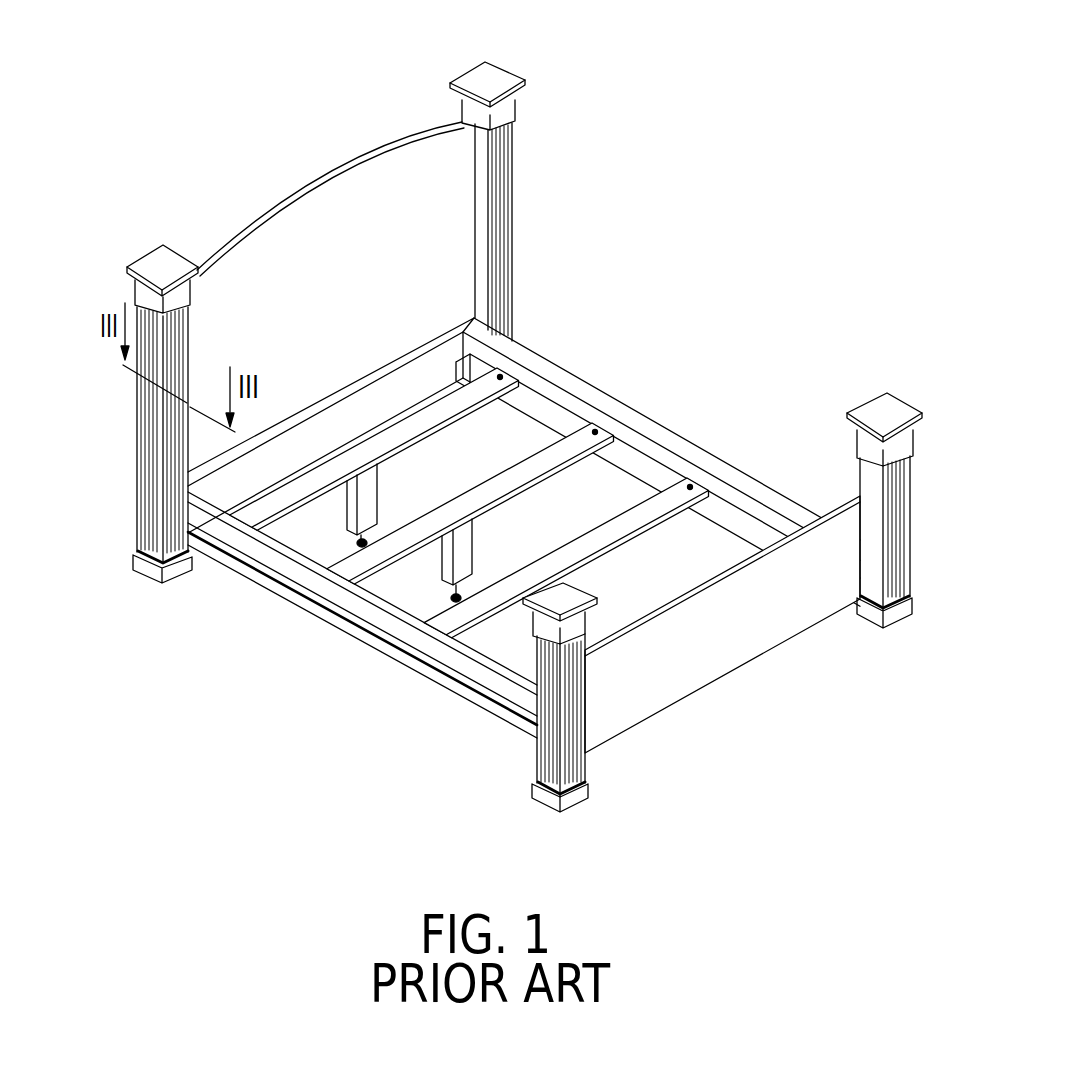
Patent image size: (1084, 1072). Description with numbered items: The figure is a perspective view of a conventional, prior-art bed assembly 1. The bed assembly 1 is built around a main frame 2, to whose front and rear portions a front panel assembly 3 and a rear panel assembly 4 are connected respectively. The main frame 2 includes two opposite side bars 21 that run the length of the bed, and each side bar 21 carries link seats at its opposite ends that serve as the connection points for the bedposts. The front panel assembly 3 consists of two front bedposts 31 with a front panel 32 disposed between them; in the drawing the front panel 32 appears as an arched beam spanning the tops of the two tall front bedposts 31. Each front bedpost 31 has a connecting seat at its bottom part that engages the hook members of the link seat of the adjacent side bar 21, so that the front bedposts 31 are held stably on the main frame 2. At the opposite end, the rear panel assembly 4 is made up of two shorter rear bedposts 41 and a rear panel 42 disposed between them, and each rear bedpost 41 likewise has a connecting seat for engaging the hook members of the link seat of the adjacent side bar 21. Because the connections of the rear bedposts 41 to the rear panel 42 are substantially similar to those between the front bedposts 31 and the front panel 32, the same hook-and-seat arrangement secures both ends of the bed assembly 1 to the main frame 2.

The bed assembly 1 is at (592, 208).
The main frame 2 is at (524, 536).
The side bar 21 is at (641, 410).
The front panel assembly 3 is at (381, 346).
The front bedpost 31 is at (503, 157).
The front panel 32 is at (297, 187).
The rear panel assembly 4 is at (696, 530).
The rear bedpost 41 is at (907, 555).
The rear panel 42 is at (757, 647).